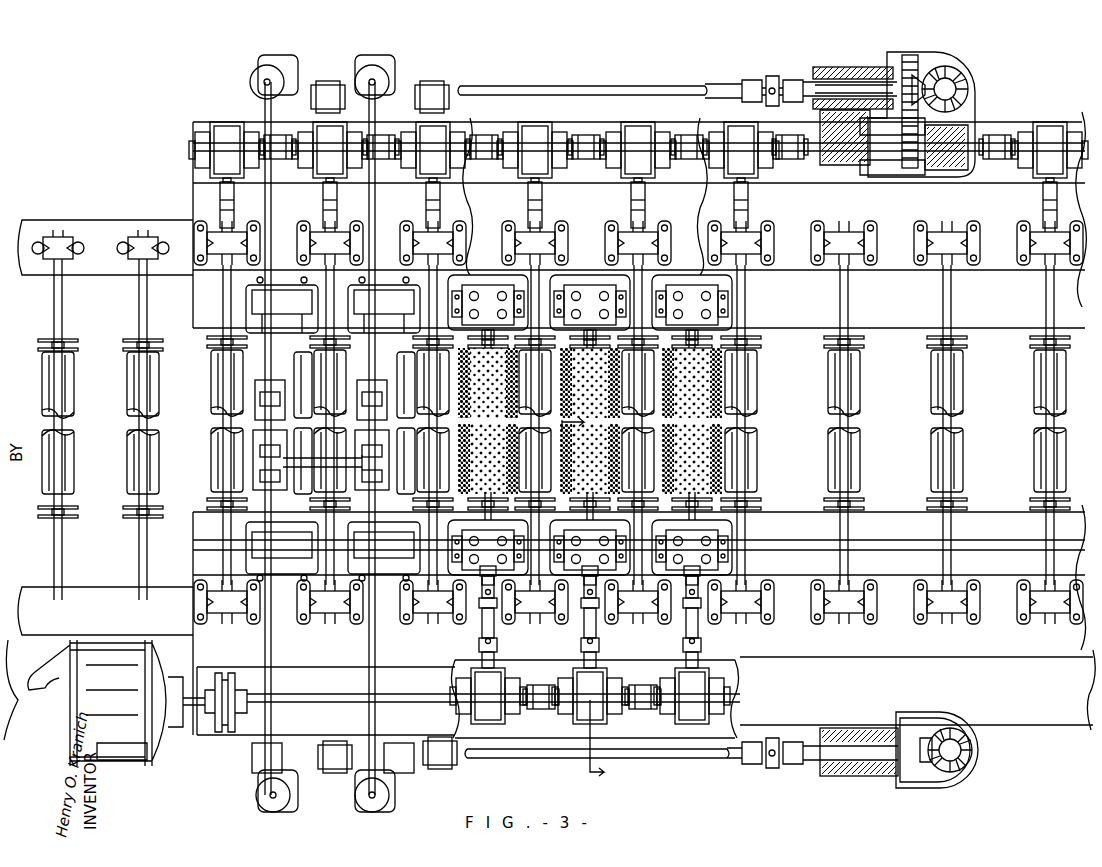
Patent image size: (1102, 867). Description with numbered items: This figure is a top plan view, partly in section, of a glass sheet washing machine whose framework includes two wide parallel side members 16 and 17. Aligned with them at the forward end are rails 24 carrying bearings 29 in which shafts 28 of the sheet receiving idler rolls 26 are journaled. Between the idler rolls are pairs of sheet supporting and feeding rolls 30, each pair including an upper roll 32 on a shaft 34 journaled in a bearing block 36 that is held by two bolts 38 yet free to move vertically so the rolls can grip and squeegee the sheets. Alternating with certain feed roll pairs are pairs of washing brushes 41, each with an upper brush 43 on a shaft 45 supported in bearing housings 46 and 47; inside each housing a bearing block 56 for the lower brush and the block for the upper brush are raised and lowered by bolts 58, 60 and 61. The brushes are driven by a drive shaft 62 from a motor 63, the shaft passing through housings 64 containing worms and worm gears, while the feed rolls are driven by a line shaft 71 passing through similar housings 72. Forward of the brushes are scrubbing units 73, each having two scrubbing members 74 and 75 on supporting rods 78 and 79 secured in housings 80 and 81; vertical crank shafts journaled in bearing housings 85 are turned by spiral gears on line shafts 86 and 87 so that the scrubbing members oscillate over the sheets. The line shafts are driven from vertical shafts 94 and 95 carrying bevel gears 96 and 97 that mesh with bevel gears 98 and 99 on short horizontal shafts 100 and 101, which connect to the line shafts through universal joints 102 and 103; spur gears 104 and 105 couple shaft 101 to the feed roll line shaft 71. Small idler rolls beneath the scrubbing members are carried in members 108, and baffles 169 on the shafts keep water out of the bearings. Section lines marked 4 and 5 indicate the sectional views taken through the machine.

The section line 4 is at (591, 600).
The section line 5 is at (385, 826).
The side member 16 is at (207, 208).
The side member 17 is at (1050, 710).
The rails 24 is at (69, 269).
The sheet receiving idler rolls 26 is at (138, 460).
The shafts 28 is at (136, 310).
The bearings 29 is at (153, 238).
The sheet supporting and feeding rolls 30 is at (798, 408).
The upper roll 32 is at (1036, 366).
The shaft 34 is at (946, 520).
The bearing block 36 is at (1050, 240).
The bolts 38 is at (856, 598).
The washing brushes 41 is at (758, 370).
The upper brush 43 is at (758, 456).
The shaft 45 is at (744, 332).
The bearing housing 46 is at (690, 280).
The bearing housing 47 is at (758, 514).
The bearing block 56 is at (497, 380).
The bolt 58 is at (482, 292).
The bolt 60 is at (461, 380).
The bolt 61 is at (458, 282).
The drive shaft 62 is at (328, 700).
The motor 63 is at (164, 750).
The housings 64 is at (588, 678).
The line shaft 71 is at (804, 160).
The housings 72 is at (624, 188).
The scrubbing units 73 is at (222, 438).
The scrubbing member 74 is at (226, 364).
The scrubbing member 75 is at (348, 362).
The supporting rod 78 is at (272, 202).
The supporting rod 79 is at (376, 200).
The housing 80 is at (286, 78).
The housing 81 is at (354, 798).
The bearing housing 85 is at (252, 104).
The line shaft 86 is at (538, 758).
The line shaft 87 is at (610, 92).
The vertical shaft 94 is at (968, 770).
The vertical shaft 95 is at (960, 76).
The bevel gear 96 is at (960, 734).
The bevel gear 97 is at (976, 94).
The bevel gear 98 is at (934, 776).
The bevel gear 99 is at (975, 118).
The horizontal shaft 100 is at (828, 774).
The horizontal shaft 101 is at (840, 80).
The universal joint 102 is at (770, 768).
The universal joint 103 is at (774, 80).
The spur gear 104 is at (886, 56).
The spur gear 105 is at (910, 168).
The members 108 is at (290, 286).
The baffles 169 is at (932, 508).